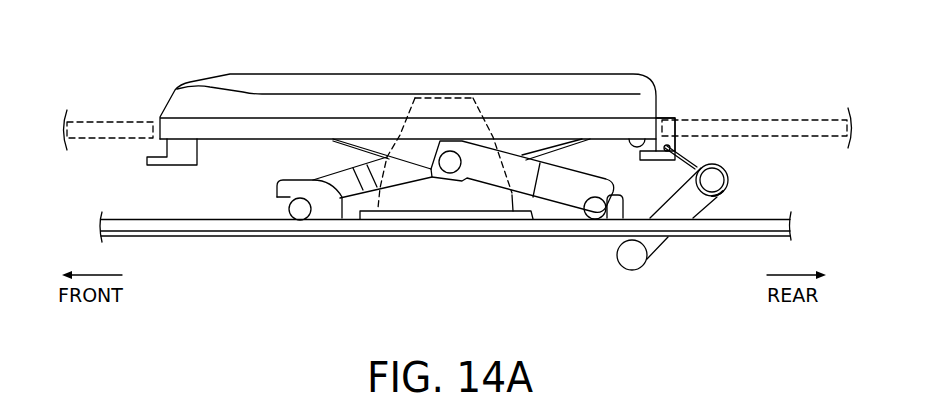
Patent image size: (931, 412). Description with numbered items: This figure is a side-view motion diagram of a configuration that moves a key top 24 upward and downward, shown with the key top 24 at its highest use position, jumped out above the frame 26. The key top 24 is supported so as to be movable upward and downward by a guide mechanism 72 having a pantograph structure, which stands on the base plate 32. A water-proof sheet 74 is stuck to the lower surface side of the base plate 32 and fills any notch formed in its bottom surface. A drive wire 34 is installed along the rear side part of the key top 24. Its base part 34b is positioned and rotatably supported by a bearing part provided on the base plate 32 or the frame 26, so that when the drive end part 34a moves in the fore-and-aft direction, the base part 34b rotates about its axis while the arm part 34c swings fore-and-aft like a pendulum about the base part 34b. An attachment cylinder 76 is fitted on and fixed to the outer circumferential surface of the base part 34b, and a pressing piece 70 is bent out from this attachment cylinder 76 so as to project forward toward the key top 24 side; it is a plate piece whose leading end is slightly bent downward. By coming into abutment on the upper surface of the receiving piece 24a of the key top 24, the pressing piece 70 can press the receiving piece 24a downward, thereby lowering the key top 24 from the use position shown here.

The key top 24 is at (648, 63).
The receiving piece 24a is at (672, 148).
The frame 26 is at (107, 120).
The base plate 32 is at (190, 226).
The water-proof sheet 74 is at (237, 232).
The guide mechanism 72 is at (483, 163).
The pressing piece 70 is at (690, 152).
The drive wire 34 is at (706, 239).
The drive end part 34a is at (632, 262).
The base part 34b is at (716, 178).
The arm part 34c is at (683, 207).
The attachment cylinder 76 is at (729, 195).